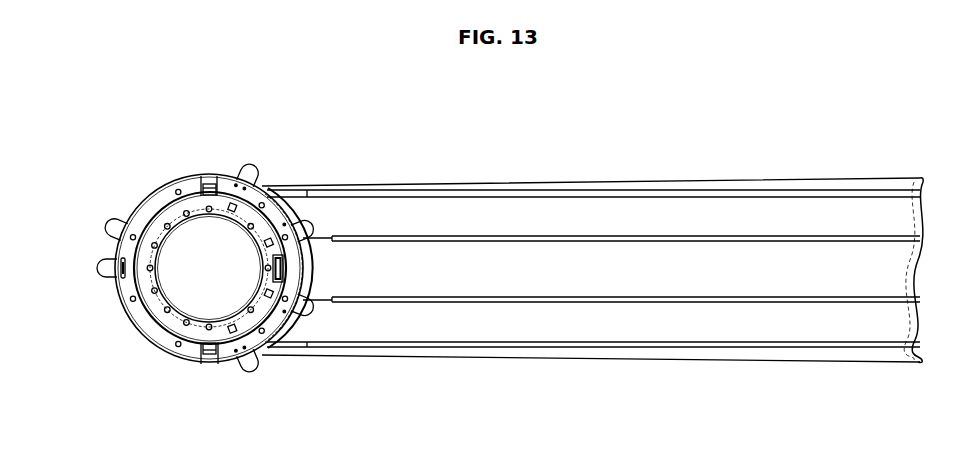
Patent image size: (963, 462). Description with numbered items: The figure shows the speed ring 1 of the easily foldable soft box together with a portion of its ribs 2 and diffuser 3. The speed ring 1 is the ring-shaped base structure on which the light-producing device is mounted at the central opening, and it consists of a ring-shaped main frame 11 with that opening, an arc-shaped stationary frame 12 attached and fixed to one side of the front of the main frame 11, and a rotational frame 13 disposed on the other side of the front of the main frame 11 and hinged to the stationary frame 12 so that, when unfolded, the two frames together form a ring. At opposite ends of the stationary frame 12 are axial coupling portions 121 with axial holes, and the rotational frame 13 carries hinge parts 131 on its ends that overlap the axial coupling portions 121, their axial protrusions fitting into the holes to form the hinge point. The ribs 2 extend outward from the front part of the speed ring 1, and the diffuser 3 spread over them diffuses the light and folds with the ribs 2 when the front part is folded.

The speed ring 1 is at (189, 273).
The main frame 11 is at (115, 292).
The stationary frame 12 is at (289, 196).
The rotational frame 13 is at (292, 236).
The axial coupling portions 121 is at (198, 190).
The hinge parts 131 is at (206, 176).
The ribs 2 is at (667, 300).
The diffuser 3 is at (784, 330).